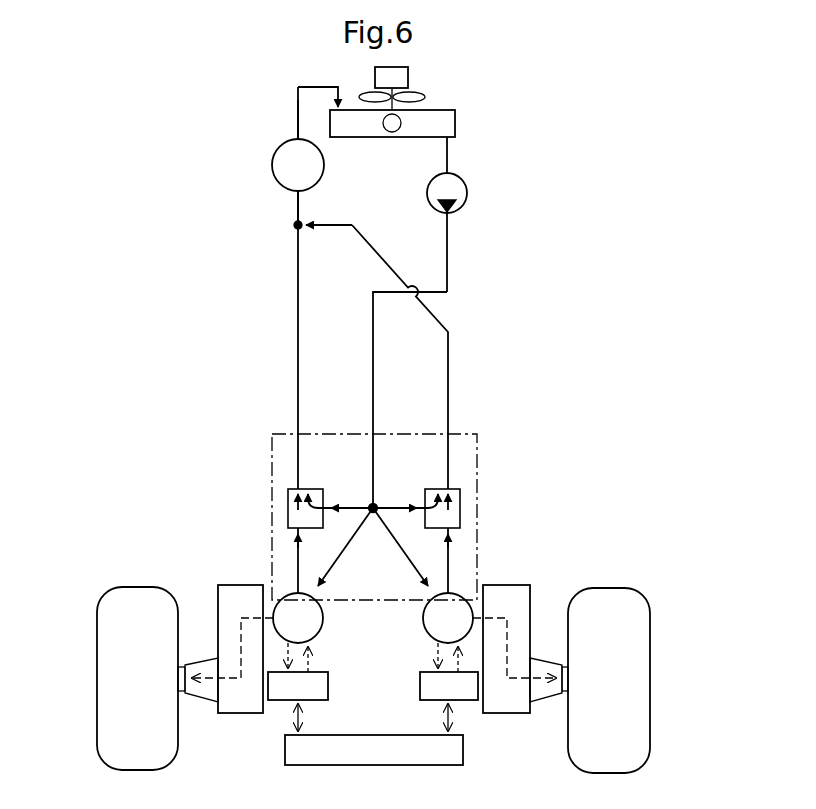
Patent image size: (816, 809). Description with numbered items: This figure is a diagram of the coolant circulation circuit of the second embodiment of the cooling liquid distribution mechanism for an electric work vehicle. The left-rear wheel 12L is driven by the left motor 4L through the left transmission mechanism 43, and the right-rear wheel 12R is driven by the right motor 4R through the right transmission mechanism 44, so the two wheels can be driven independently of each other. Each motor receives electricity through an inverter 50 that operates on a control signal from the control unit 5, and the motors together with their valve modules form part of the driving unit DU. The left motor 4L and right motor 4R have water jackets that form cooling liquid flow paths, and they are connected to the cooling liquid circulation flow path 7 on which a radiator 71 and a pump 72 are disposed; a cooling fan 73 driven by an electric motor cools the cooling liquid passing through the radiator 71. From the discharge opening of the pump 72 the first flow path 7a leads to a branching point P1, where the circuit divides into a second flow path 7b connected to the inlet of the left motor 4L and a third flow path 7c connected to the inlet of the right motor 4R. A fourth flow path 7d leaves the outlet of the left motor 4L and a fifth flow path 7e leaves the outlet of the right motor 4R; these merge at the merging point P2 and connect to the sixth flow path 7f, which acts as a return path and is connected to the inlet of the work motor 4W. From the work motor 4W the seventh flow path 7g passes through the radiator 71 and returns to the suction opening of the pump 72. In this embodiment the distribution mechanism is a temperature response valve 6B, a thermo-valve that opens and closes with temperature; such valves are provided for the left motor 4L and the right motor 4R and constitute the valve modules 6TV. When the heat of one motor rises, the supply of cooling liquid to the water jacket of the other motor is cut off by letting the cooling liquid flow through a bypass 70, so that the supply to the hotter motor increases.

The cooling liquid circulation flow path 7 is at (292, 112).
The seventh flow path 7g is at (296, 124).
The work motor 4W is at (271, 165).
The sixth flow path 7f is at (296, 208).
The merging point P2 is at (294, 229).
The radiator 71 is at (455, 125).
The cooling fan 73 is at (408, 78).
The pump 72 is at (467, 193).
The first flow path 7a is at (447, 272).
The fifth flow path 7e is at (448, 398).
The fourth flow path 7d is at (297, 395).
The temperature response valve 6B is at (270, 440).
The branching point P1 is at (376, 504).
The bypass 70 is at (345, 505).
The valve module 6TV is at (286, 500).
The driving unit DU is at (194, 545).
The second flow path 7b is at (348, 546).
The third flow path 7c is at (409, 558).
The left motor 4L is at (284, 596).
The right motor 4R is at (466, 596).
The left transmission mechanism 43 is at (222, 616).
The right transmission mechanism 44 is at (508, 625).
The left-rear wheel 12L is at (100, 614).
The right-rear wheel 12R is at (608, 596).
The inverter 50 is at (330, 688).
The control unit 5 is at (284, 750).